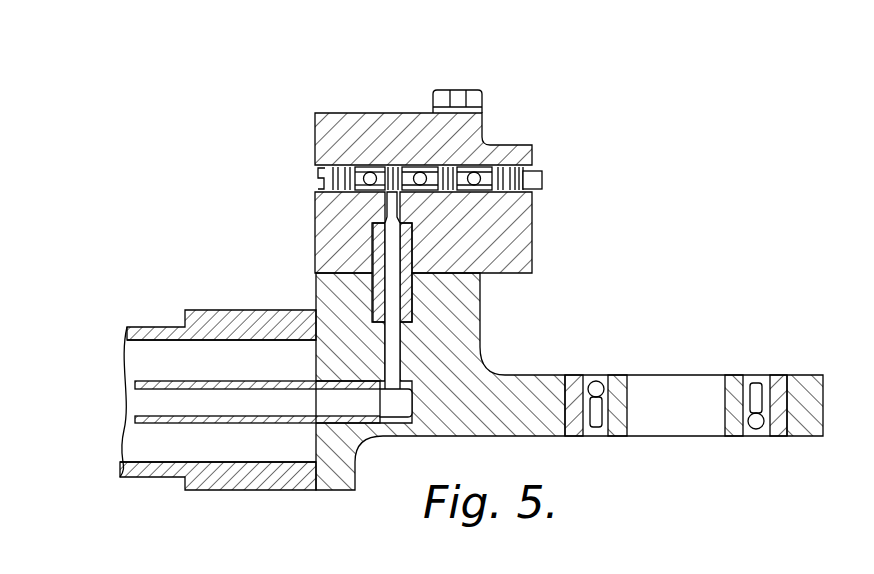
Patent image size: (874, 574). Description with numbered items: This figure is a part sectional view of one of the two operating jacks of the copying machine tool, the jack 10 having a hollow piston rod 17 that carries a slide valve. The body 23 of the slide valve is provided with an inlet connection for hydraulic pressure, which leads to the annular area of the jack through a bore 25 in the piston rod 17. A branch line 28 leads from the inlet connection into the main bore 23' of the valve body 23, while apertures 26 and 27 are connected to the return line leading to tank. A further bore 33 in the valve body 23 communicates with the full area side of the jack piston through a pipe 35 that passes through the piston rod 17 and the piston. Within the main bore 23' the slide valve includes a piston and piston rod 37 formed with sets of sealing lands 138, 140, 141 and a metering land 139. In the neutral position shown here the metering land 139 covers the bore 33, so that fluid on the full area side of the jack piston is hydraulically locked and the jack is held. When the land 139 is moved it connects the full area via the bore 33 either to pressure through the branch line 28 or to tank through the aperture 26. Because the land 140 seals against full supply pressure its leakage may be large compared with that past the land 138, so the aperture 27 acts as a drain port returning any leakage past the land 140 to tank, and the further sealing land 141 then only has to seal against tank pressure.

The jack 10 is at (118, 352).
The piston rod 17 is at (144, 325).
The valve body 23 is at (468, 181).
The main bore 23' is at (380, 136).
The bore 25 is at (240, 362).
The aperture 26 is at (372, 163).
The aperture 27 is at (483, 165).
The branch line 28 is at (417, 163).
The bore 33 is at (387, 213).
The pipe 35 is at (220, 404).
The piston and piston rod 37 is at (543, 177).
The sealing land 138 is at (343, 165).
The metering land 139 is at (406, 165).
The sealing land 140 is at (442, 165).
The sealing land 141 is at (535, 193).